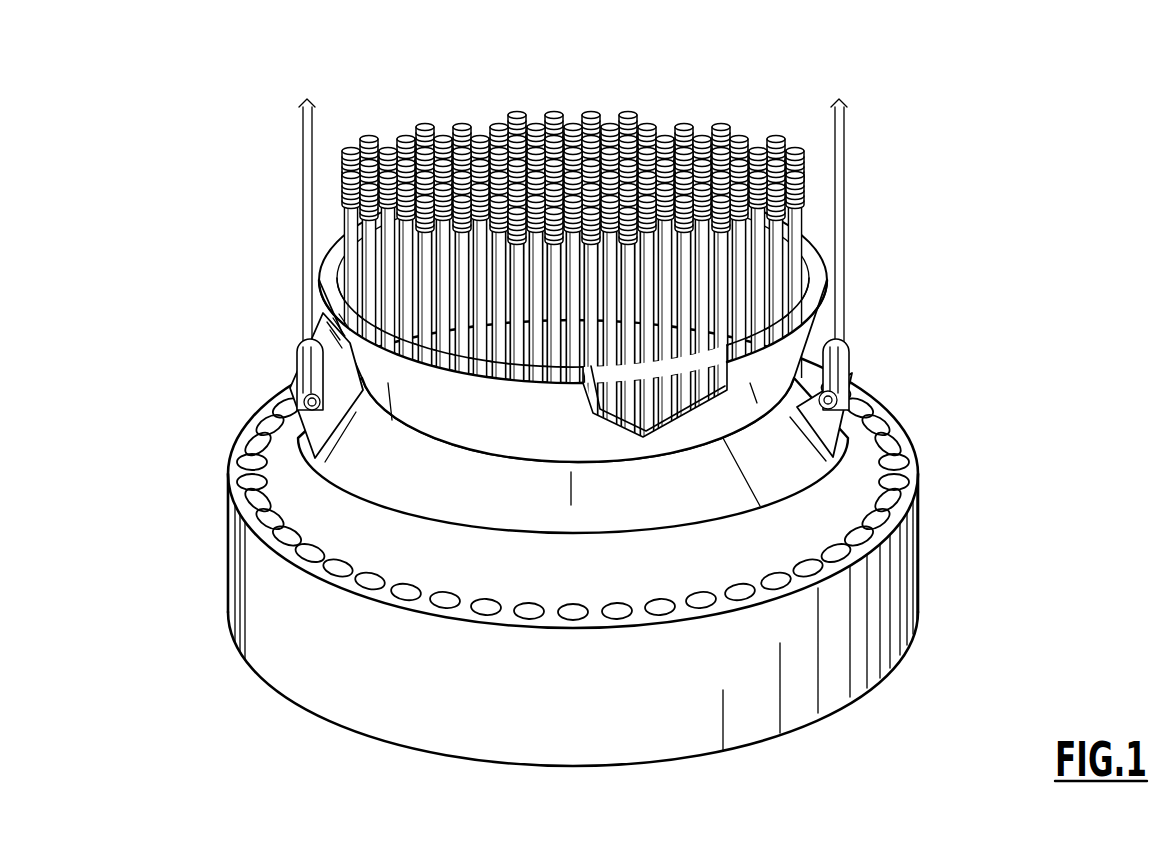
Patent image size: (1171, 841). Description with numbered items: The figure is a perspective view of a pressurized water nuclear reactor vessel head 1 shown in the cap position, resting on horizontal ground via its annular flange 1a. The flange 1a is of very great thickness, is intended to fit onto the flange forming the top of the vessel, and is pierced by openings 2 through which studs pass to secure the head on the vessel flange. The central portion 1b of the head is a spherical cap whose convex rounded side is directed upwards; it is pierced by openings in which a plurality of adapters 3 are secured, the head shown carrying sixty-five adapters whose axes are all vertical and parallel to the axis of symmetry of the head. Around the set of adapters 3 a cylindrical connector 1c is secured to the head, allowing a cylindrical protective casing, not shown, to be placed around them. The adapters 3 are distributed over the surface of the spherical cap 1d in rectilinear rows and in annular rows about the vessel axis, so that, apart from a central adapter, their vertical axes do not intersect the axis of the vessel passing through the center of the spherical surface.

The vessel head 1 is at (561, 421).
The annular flange 1a is at (853, 473).
The central portion 1b is at (510, 506).
The cylindrical connector 1c is at (573, 308).
The spherical cap 1d is at (621, 407).
The openings 2 is at (876, 538).
The adapters 3 is at (694, 132).